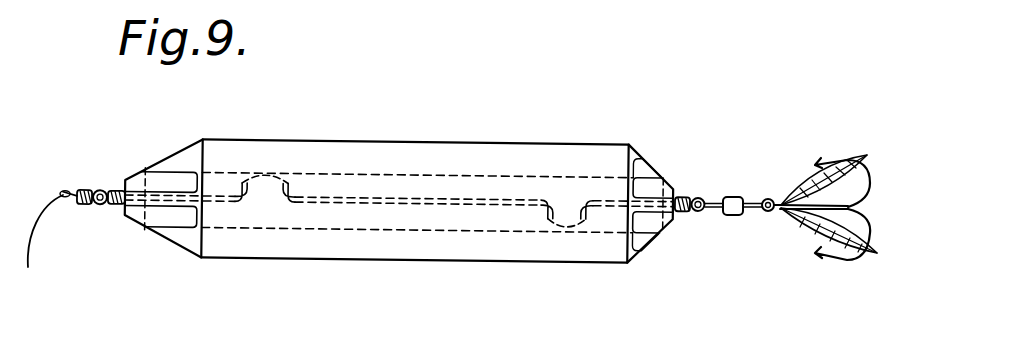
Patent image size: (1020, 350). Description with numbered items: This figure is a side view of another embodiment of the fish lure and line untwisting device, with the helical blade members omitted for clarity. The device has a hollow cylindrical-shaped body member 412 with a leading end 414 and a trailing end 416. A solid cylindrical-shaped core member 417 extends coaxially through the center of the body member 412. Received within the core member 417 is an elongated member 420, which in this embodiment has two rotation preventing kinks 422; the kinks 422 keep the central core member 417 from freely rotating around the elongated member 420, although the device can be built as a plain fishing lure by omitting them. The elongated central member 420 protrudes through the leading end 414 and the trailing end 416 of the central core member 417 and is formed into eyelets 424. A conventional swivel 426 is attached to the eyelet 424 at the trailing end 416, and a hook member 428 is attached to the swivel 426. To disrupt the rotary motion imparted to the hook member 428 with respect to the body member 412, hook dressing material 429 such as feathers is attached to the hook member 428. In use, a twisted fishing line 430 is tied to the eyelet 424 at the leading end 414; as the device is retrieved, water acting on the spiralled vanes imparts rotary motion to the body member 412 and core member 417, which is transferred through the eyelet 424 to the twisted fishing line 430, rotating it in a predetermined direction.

The body member 412 is at (327, 140).
The leading end 414 is at (148, 162).
The trailing end 416 is at (661, 149).
The core member 417 is at (165, 214).
The elongated member 420 is at (388, 186).
The rotation preventing kink 422 is at (262, 187).
The eyelet 424 is at (106, 188).
The conventional swivel 426 is at (731, 216).
The hook member 428 is at (822, 253).
The hook dressing material 429 is at (803, 187).
The twisted fishing line 430 is at (56, 239).